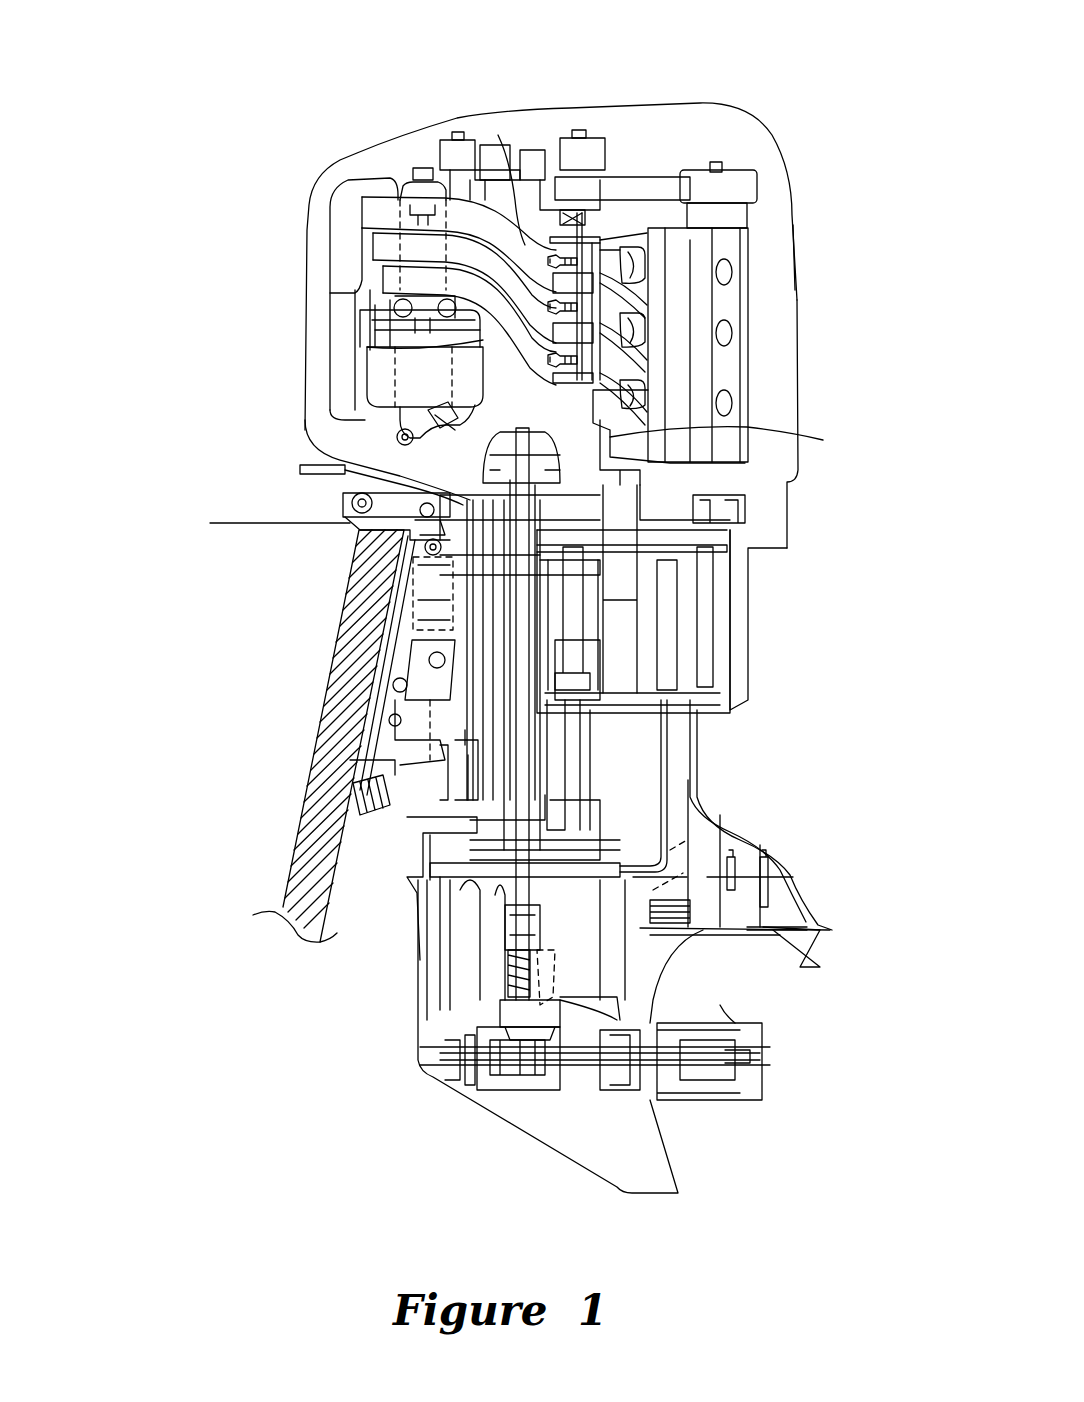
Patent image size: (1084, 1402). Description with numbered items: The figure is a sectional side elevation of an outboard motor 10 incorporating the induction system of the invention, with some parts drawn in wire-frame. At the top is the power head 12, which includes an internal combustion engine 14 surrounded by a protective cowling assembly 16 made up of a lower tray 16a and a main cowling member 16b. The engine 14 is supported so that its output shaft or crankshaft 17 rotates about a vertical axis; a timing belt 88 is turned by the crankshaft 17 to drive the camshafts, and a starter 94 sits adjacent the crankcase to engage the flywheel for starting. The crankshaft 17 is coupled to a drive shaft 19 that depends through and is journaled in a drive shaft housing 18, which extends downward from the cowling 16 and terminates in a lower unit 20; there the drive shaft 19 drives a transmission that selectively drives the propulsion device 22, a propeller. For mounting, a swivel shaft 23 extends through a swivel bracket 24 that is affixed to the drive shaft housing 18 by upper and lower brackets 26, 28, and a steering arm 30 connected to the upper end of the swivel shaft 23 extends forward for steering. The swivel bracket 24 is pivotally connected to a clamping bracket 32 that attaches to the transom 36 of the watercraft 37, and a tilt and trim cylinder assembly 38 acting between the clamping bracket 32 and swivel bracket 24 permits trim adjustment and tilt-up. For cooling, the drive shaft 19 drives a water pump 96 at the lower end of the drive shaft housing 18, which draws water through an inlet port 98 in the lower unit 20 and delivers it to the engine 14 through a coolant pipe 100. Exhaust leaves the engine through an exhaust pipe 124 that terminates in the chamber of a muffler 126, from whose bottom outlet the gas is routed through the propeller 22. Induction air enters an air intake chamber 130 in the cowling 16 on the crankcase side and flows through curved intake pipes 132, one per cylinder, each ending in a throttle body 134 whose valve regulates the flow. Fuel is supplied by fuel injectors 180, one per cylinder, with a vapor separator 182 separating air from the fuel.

The outboard motor 10 is at (748, 82).
The power head 12 is at (770, 133).
The internal combustion engine 14 is at (540, 222).
The protective cowling assembly 16 is at (798, 215).
The lower tray 16a is at (790, 490).
The main cowling member 16b is at (800, 270).
The output shaft (crankshaft) 17 is at (520, 160).
The drive shaft housing 18 is at (698, 745).
The drive shaft 19 is at (550, 755).
The lower unit 20 is at (667, 950).
The propulsion device (propeller) 22 is at (710, 1097).
The swivel shaft 23 is at (470, 745).
The swivel bracket 24 is at (445, 597).
The upper bracket 26 is at (410, 540).
The lower bracket 28 is at (470, 818).
The steering arm 30 is at (300, 465).
The clamping bracket 32 is at (345, 505).
The transom 36 is at (343, 683).
The watercraft 37 is at (237, 518).
The tilt and trim cylinder assembly 38 is at (388, 812).
The timing belt 88 is at (660, 182).
The starter 94 is at (413, 193).
The water pump 96 is at (503, 860).
The inlet port 98 is at (552, 988).
The coolant pipe 100 is at (565, 722).
The exhaust pipe 124 is at (628, 643).
The muffler 126 is at (650, 775).
The air intake chamber 130 is at (340, 265).
The intake pipes 132 is at (370, 352).
The throttle body 134 is at (610, 437).
The fuel injectors 180 is at (545, 362).
The vapor separator 182 is at (410, 378).